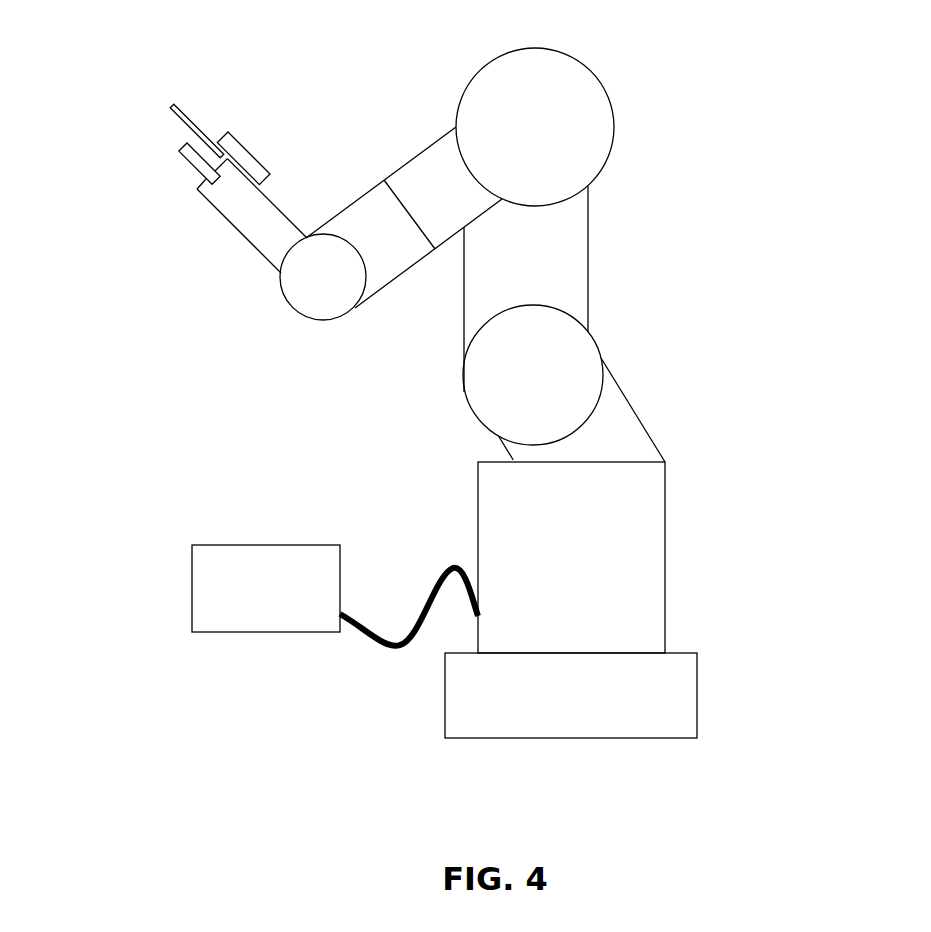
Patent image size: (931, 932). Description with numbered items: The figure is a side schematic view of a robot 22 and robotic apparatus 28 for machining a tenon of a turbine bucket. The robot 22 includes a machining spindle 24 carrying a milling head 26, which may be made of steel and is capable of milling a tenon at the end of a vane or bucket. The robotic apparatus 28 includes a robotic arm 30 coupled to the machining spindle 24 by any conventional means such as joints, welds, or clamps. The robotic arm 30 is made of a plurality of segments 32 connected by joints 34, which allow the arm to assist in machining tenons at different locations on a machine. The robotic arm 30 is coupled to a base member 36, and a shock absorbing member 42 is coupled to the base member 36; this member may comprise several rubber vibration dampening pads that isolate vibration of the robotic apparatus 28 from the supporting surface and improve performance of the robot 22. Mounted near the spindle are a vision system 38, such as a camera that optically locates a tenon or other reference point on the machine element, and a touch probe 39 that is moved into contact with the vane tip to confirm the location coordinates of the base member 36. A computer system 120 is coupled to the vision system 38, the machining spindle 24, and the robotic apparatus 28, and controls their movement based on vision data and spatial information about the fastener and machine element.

The robot 22 is at (138, 106).
The machining spindle 24 is at (263, 230).
The milling head 26 is at (202, 172).
The robotic apparatus 28 is at (750, 366).
The robotic arm 30 is at (417, 338).
The segments 32 is at (425, 167).
The joints 34 is at (310, 298).
The base member 36 is at (650, 518).
The vision system 38 is at (238, 152).
The touch probe 39 is at (190, 122).
The shock absorbing member 42 is at (675, 693).
The computer system 120 is at (335, 595).